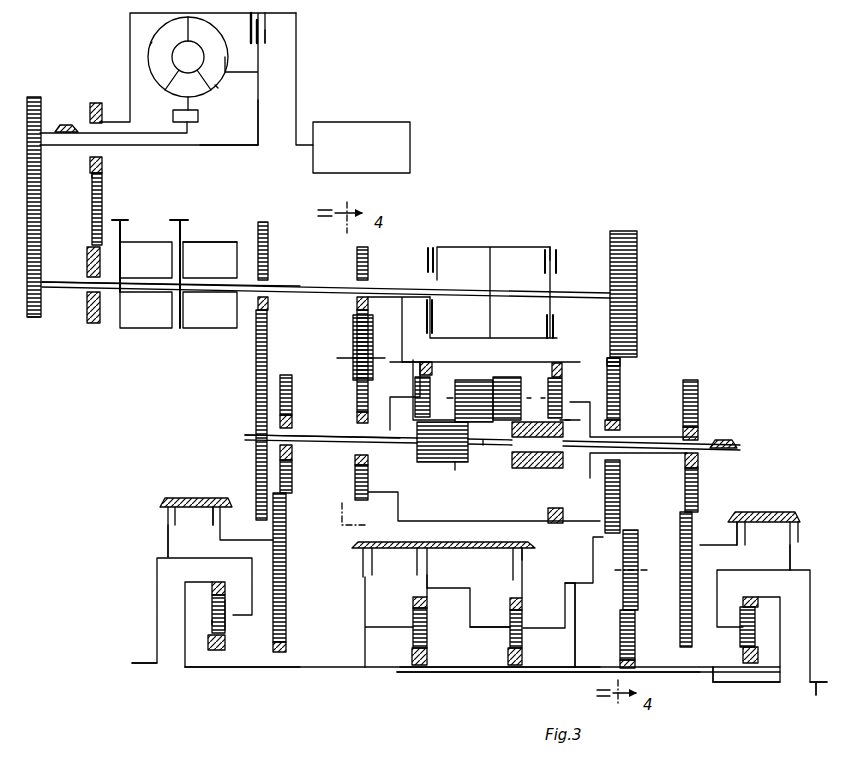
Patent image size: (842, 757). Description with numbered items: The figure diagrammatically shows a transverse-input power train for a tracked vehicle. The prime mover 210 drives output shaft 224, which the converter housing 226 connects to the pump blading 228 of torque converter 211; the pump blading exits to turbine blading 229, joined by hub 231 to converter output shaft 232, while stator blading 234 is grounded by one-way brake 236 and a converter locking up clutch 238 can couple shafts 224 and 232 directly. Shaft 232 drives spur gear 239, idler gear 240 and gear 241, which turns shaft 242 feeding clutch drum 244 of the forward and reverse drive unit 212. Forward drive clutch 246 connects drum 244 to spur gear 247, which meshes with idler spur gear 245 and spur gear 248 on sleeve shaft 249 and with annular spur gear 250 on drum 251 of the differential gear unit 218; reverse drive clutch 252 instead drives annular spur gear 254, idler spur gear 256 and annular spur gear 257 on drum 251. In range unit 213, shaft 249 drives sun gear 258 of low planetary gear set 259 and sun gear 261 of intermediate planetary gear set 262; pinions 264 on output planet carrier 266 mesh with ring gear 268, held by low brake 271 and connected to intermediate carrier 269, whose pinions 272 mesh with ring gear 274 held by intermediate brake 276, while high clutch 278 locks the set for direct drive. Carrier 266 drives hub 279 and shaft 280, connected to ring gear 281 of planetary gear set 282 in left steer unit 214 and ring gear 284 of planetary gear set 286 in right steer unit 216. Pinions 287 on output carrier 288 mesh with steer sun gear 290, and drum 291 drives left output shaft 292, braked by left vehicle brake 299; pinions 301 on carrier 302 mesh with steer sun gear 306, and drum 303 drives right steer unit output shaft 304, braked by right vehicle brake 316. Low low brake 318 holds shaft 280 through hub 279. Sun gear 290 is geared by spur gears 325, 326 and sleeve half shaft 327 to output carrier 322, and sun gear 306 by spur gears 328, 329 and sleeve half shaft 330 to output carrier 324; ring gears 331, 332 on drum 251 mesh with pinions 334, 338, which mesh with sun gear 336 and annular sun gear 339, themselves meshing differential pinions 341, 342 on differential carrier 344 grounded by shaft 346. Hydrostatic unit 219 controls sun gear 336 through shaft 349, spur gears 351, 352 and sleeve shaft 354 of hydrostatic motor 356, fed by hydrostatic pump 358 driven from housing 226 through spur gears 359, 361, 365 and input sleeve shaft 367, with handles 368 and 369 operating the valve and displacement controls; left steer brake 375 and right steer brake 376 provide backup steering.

The prime mover 210 is at (392, 122).
The torque converter 211 is at (126, 14).
The forward and reverse drive unit 212 is at (568, 246).
The range unit 213 is at (469, 676).
The left steer unit 214 is at (281, 672).
The right steer unit 216 is at (760, 687).
The differential gear unit 218 is at (578, 355).
The hydrostatic unit 219 is at (212, 236).
The output shaft 224 is at (297, 138).
The converter housing 226 is at (286, 16).
The pump blading 228 is at (151, 42).
The turbine blading 229 is at (214, 85).
The hub 231 is at (259, 118).
The converter output shaft 232 is at (244, 146).
The stator blading 234 is at (178, 97).
The one-way brake 236 is at (180, 134).
The converter locking up clutch 238 is at (268, 38).
The spur gear 239 is at (33, 96).
The idler gear 240 is at (45, 233).
The gear 241 is at (35, 318).
The shaft 242 is at (281, 285).
The clutch drum 244 is at (458, 247).
The idler spur gear 245 is at (640, 532).
The forward drive clutch 246 is at (550, 250).
The spur gear 247 is at (640, 240).
The spur gear 248 is at (636, 625).
The sleeve shaft 249 is at (589, 666).
The annular spur gear 250 is at (621, 366).
The drum 251 is at (510, 360).
The reverse drive clutch 252 is at (427, 270).
The annular spur gear 254 is at (356, 263).
The idler spur gear 256 is at (353, 343).
The annular spur gear 257 is at (355, 395).
The sun gear 258 is at (413, 657).
The low planetary gear set 259 is at (410, 621).
The sun gear 261 is at (523, 660).
The intermediate planetary gear set 262 is at (531, 603).
The pinions 264 is at (428, 624).
The output planet carrier 266 is at (365, 622).
The ring gear 268 is at (420, 597).
The intermediate carrier 269 is at (503, 633).
The low brake 271 is at (428, 563).
The pinions 272 is at (523, 628).
The ring gear 274 is at (509, 603).
The intermediate brake 276 is at (538, 558).
The high clutch 278 is at (594, 570).
The hub 279 is at (362, 630).
The steer units' input shaft 280 is at (396, 673).
The ring gear 281 is at (211, 586).
The planetary gear set 282 is at (231, 638).
The ring gear 284 is at (751, 597).
The planetary gear set 286 is at (733, 650).
The pinions 287 is at (211, 622).
The output carrier 288 is at (233, 615).
The steer sun gear 290 is at (212, 651).
The drum 291 is at (211, 557).
The left output shaft 292 is at (138, 661).
The left vehicle brake 299 is at (166, 522).
The pinions 301 is at (757, 640).
The carrier 302 is at (725, 623).
The drum 303 is at (758, 570).
The right steer unit output shaft 304 is at (816, 698).
The steer sun gear 306 is at (758, 664).
The right vehicle brake 316 is at (800, 517).
The low low brake 318 is at (350, 547).
The output carrier 322 is at (392, 387).
The output carrier 324 is at (592, 402).
The spur gear 325 is at (288, 507).
The spur gear 326 is at (288, 373).
The sleeve half shaft 327 is at (308, 432).
The spur gear 328 is at (622, 392).
The spur gear 329 is at (699, 392).
The sleeve half shaft 330 is at (698, 427).
The ring gear 331 is at (403, 372).
The ring gear 332 is at (570, 394).
The pinions 334 is at (402, 446).
The sun gear 336 is at (456, 470).
The pinions 338 is at (614, 429).
The annular sun gear 339 is at (541, 469).
The differential pinion 341 is at (472, 380).
The differential pinion 342 is at (513, 378).
The differential carrier 344 is at (483, 441).
The shaft 346 is at (726, 441).
The shaft 349 is at (252, 453).
The spur gear 351 is at (252, 387).
The spur gear 352 is at (269, 226).
The sleeve shaft 354 is at (248, 278).
The hydrostatic motor 356 is at (196, 240).
The hydrostatic pump 358 is at (143, 240).
The spur gear 359 is at (95, 102).
The spur gear 361 is at (89, 192).
The spur gear 365 is at (87, 266).
The input sleeve shaft 367 is at (112, 298).
The handle 368 is at (179, 218).
The handle 369 is at (113, 218).
The left steer brake 375 is at (220, 498).
The right steer brake 376 is at (737, 530).